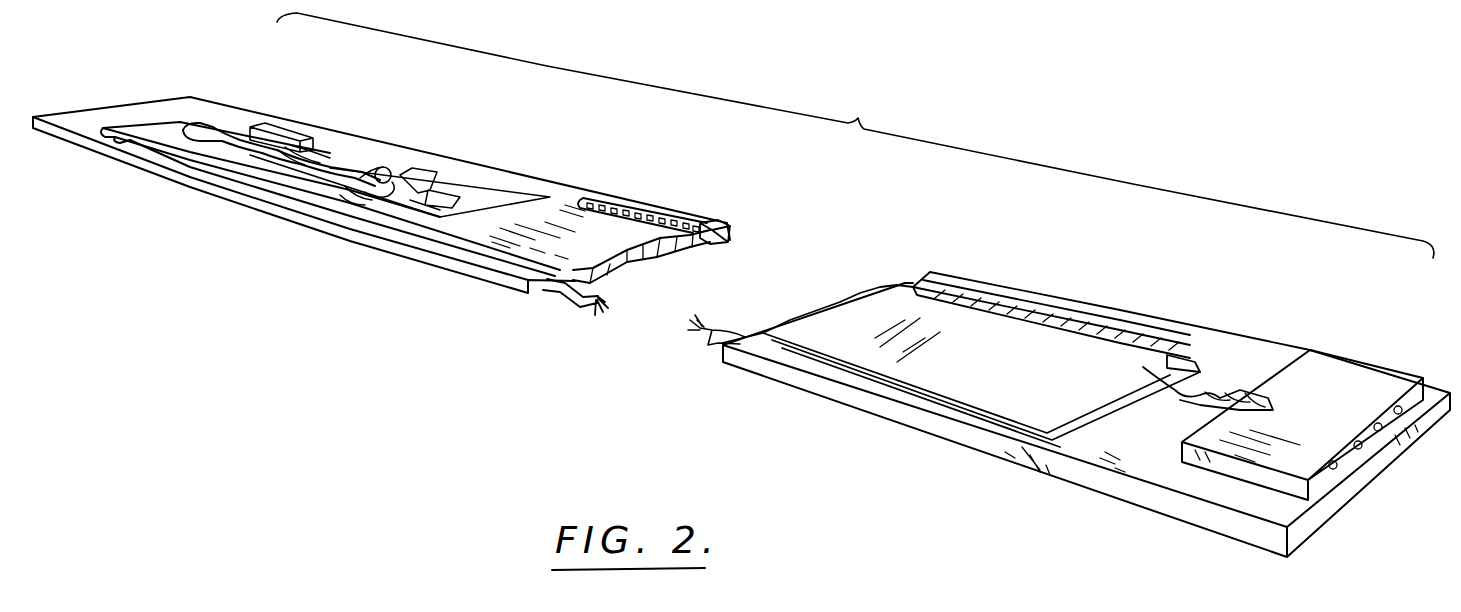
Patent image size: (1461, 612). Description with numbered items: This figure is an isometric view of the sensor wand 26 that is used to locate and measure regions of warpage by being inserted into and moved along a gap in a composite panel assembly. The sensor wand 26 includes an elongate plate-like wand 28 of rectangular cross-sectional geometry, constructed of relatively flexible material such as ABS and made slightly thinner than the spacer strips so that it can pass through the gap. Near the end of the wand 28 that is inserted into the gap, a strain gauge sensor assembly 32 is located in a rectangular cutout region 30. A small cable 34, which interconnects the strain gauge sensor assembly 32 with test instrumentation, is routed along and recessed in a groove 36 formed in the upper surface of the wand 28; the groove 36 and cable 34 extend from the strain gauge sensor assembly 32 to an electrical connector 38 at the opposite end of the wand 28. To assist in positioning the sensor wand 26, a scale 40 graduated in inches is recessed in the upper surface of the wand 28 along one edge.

The sensor wand 26 is at (855, 135).
The wand 28 is at (1122, 487).
The rectangular cutout region 30 is at (482, 207).
The strain gauge sensor assembly 32 is at (373, 172).
The cable 34 is at (217, 123).
The groove 36 is at (593, 272).
The electrical connector 38 is at (1367, 380).
The scale 40 is at (738, 192).